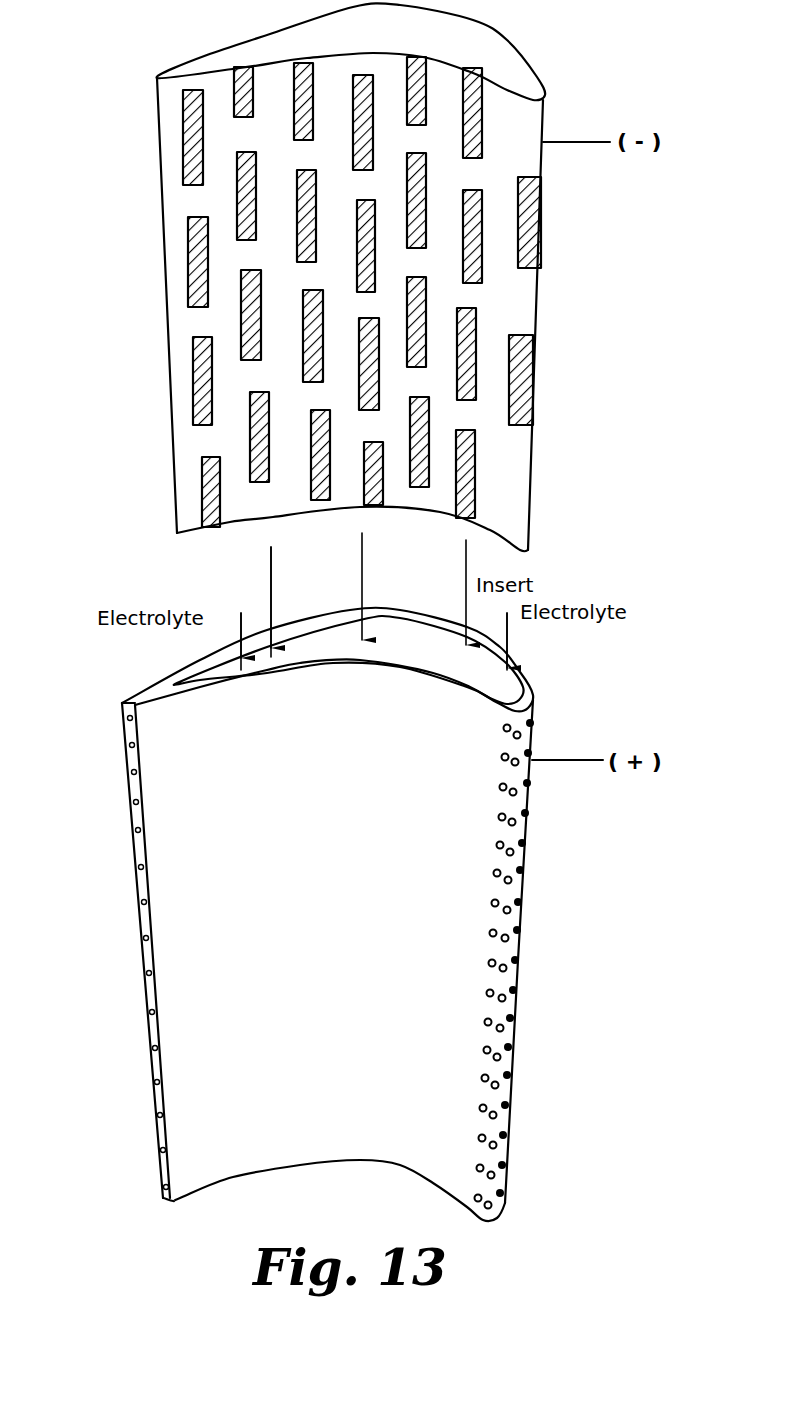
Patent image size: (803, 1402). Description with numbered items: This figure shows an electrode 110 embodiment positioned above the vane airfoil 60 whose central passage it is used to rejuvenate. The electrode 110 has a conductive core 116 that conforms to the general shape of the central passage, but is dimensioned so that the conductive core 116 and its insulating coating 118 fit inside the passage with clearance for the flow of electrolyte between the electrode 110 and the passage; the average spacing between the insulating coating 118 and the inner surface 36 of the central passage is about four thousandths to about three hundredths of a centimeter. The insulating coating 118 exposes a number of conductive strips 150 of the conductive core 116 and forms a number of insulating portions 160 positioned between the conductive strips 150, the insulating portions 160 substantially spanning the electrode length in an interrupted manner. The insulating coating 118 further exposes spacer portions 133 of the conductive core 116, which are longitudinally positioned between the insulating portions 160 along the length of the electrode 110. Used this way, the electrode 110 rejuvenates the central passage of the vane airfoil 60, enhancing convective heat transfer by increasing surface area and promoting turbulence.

The conductive strips 150 is at (168, 120).
The insulating portions 160 is at (190, 245).
The spacer portions 133 is at (257, 376).
The insulating coating 118 is at (535, 232).
The conductive core 116 is at (527, 300).
The electrode 110 is at (537, 387).
The inner surface 36 is at (433, 623).
The vane airfoil 60 is at (528, 808).